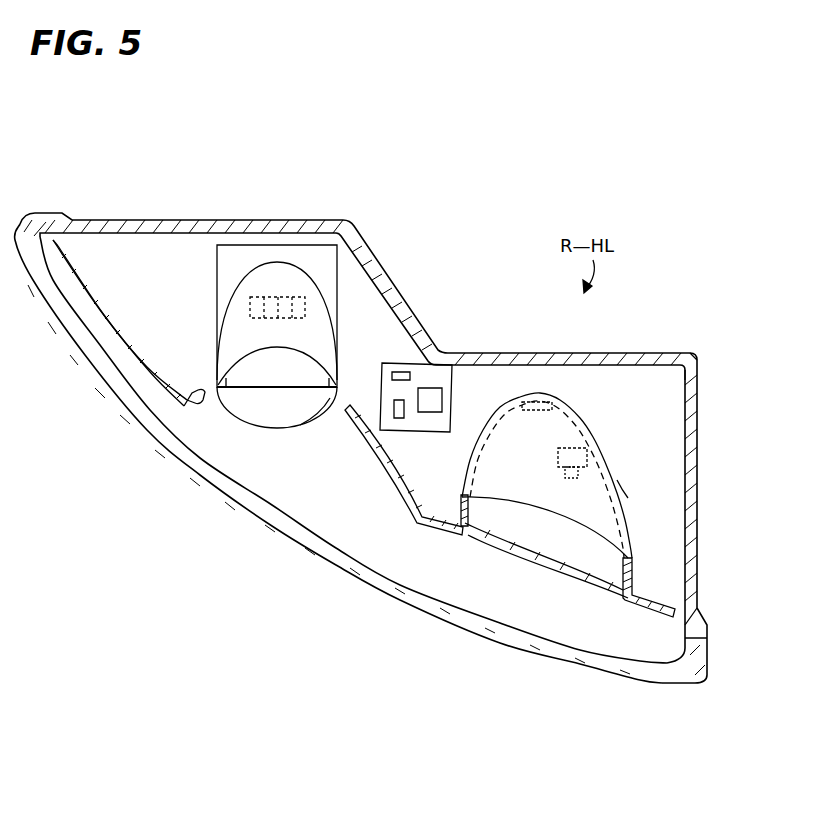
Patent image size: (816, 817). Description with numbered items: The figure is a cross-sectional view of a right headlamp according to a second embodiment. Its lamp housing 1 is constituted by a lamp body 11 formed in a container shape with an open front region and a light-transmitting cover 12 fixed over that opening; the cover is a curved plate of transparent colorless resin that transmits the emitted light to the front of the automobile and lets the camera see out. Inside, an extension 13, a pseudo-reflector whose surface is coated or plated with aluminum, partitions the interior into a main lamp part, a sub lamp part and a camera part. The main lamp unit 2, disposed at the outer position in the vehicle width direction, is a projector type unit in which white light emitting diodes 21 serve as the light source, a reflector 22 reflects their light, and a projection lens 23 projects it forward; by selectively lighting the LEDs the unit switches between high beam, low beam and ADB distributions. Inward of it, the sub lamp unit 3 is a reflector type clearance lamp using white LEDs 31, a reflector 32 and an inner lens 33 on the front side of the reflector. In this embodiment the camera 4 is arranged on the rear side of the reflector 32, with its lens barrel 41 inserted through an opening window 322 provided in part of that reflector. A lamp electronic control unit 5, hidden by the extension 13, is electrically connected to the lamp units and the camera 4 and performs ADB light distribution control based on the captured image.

The lamp housing 1 is at (413, 298).
The lamp body 11 is at (676, 357).
The light-transmitting cover 12 is at (345, 569).
The extension 13 is at (100, 317).
The main lamp unit 2 is at (272, 244).
The white light emitting diodes 21 is at (250, 306).
The reflector 22 is at (230, 347).
The projection lens 23 is at (305, 413).
The lamp electronic control unit 5 is at (417, 360).
The sub lamp unit 3 is at (547, 392).
The white LEDs 31 is at (528, 417).
The reflector 32 is at (473, 457).
The inner lens 33 is at (503, 553).
The camera 4 is at (583, 450).
The lens barrel 41 is at (580, 470).
The opening window 322 is at (622, 487).